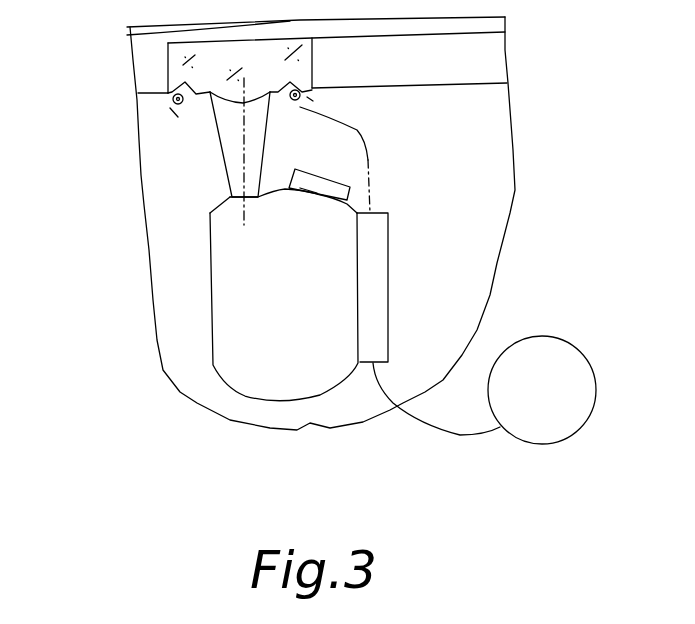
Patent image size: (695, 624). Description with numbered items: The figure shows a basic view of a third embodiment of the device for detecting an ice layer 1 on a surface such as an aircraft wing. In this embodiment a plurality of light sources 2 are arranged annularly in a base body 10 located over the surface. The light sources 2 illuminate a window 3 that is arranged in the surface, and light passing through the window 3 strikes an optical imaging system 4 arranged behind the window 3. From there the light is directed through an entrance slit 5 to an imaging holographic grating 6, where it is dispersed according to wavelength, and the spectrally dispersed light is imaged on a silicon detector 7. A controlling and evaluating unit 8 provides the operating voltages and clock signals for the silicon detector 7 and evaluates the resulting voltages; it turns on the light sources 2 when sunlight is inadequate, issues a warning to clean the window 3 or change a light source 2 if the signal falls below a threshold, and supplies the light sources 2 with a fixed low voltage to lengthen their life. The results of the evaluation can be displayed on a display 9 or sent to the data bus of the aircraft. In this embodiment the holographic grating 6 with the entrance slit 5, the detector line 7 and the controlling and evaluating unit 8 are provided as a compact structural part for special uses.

The ice layer 1 is at (143, 35).
The light source 2 is at (173, 108).
The window 3 is at (168, 67).
The optical imaging system 4 is at (240, 100).
The entrance slit 5 is at (210, 213).
The imaging holographic grating 6 is at (225, 271).
The silicon detector 7 is at (350, 190).
The controlling and evaluating unit 8 is at (367, 255).
The display 9 is at (517, 352).
The base body 10 is at (483, 52).